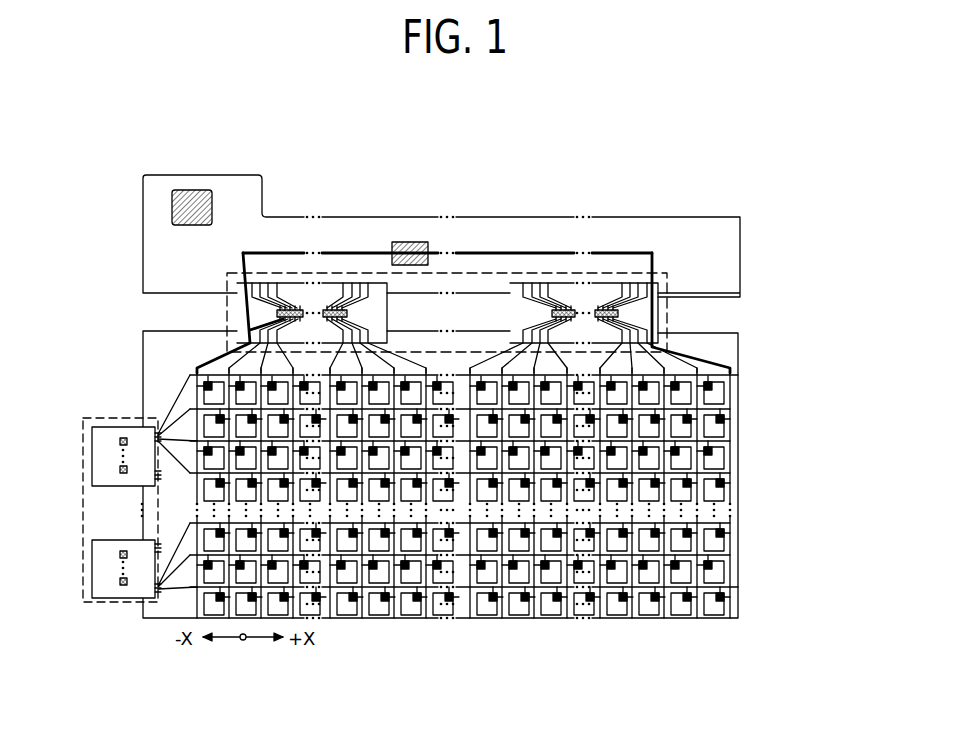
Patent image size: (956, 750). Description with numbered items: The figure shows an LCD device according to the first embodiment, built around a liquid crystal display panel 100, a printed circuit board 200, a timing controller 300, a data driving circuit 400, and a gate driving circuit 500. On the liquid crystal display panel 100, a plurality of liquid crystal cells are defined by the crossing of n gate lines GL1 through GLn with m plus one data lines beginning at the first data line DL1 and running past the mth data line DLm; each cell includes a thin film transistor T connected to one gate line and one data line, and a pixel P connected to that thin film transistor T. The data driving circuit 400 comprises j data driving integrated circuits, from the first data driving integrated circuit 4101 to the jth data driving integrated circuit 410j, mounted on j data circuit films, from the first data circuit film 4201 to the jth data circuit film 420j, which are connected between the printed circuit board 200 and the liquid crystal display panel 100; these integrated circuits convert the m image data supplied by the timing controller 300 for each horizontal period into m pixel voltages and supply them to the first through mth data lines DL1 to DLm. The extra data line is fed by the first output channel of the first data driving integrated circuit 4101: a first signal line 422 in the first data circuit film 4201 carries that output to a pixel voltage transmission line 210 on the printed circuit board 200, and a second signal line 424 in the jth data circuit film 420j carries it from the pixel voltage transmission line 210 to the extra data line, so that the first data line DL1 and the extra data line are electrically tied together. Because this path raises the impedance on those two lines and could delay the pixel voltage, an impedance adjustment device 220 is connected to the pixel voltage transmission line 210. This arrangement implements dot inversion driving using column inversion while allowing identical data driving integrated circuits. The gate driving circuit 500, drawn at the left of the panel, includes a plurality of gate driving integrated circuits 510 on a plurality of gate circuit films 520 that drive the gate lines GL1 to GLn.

The liquid crystal display panel 100 is at (143, 333).
The printed circuit board 200 is at (740, 268).
The pixel voltage transmission line 210 is at (486, 253).
The impedance adjustment device 220 is at (408, 242).
The timing controller 300 is at (190, 190).
The data driving circuit 400 is at (668, 275).
The first data driving integrated circuit 4101 is at (299, 308).
The first data circuit film 4201 is at (330, 288).
The jth data driving integrated circuit 410j is at (568, 309).
The jth data circuit film 420j is at (603, 292).
The first signal line 422 is at (245, 311).
The second signal line 424 is at (652, 313).
The gate driving circuit 500 is at (109, 488).
The gate driving integrated circuit 510 is at (120, 470).
The gate circuit film 520 is at (97, 437).
The first data line DL1 is at (197, 385).
The mth data line DLm is at (700, 462).
The first gate line GL1 is at (738, 382).
The nth gate line GLn is at (738, 587).
The thin film transistor T is at (724, 419).
The pixel P is at (720, 432).